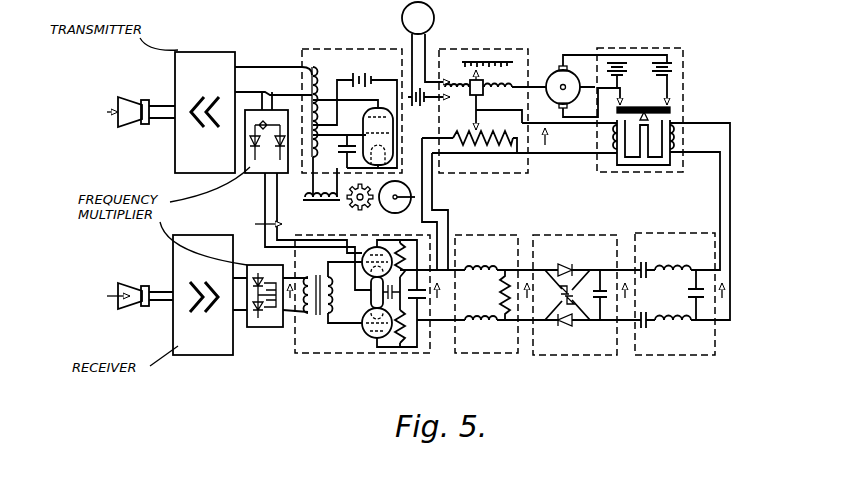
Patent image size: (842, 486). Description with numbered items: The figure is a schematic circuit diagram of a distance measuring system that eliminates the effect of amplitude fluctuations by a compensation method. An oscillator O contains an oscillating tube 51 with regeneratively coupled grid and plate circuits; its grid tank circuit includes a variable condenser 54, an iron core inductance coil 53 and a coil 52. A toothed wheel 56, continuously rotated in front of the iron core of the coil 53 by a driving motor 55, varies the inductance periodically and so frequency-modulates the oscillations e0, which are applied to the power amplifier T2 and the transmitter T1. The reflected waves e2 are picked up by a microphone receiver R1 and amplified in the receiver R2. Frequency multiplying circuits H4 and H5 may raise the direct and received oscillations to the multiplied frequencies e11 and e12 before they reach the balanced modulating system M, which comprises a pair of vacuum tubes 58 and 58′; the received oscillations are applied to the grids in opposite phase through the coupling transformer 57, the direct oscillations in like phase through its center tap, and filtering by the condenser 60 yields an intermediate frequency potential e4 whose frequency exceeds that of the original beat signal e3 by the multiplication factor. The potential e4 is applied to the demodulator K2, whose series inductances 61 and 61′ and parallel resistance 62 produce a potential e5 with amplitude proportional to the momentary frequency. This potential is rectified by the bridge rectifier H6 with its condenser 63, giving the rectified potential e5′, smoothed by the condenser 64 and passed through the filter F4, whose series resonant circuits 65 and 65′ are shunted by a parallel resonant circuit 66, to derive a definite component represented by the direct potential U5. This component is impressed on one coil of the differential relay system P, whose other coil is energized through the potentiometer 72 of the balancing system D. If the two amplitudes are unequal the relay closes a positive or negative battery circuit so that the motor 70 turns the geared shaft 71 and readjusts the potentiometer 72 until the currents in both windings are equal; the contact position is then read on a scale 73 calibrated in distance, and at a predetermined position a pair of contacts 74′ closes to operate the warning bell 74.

The power amplifier T2 is at (205, 44).
The transmitter T1 is at (147, 99).
The frequency-modulated oscillations e0 is at (291, 74).
The frequency multiplying circuit H4 is at (262, 173).
The multiplied oscillation e11 is at (280, 226).
The oscillator O is at (338, 49).
The oscillator coil 52 is at (310, 72).
The oscillating tube 51 is at (366, 120).
The variable condenser 54 is at (341, 151).
The iron core inductance coil 53 is at (308, 201).
The toothed wheel 56 is at (363, 207).
The driving motor 55 is at (400, 186).
The electric bell 74 is at (426, 45).
The pair of contacts 74′ is at (430, 103).
The balancing system D is at (476, 49).
The scale 73 is at (507, 60).
The geared shaft 71 is at (497, 92).
The potentiometer 72 is at (492, 146).
The beat frequency signal e3 is at (554, 141).
The motor 70 is at (559, 67).
The differential relay system P is at (683, 112).
The smoothing condenser 64 is at (642, 79).
The receiver R2 is at (205, 232).
The microphone receiver R1 is at (147, 287).
The reflected waves e2 is at (240, 286).
The frequency multiplying circuit H5 is at (262, 328).
The multiplied oscillation e12 is at (290, 300).
The balanced modulating system M is at (333, 355).
The coupling transformer 57 is at (325, 315).
The vacuum tube 58 is at (366, 250).
The vacuum tube 58′ is at (372, 345).
The condenser 60 is at (415, 300).
The intermediate frequency potential e4 is at (445, 297).
The demodulator network K2 is at (489, 355).
The series inductance 61 is at (488, 262).
The series inductance 61′ is at (484, 326).
The parallel resistance 62 is at (503, 294).
The demodulator output potential e5 is at (523, 299).
The rectifier H6 is at (571, 357).
The capacitor 63 is at (601, 297).
The rectified voltage e5′ is at (634, 299).
The filter F4 is at (674, 357).
The series resonant circuit 65 is at (690, 256).
The series resonant circuit 65′ is at (690, 336).
The parallel resonant circuit 66 is at (686, 291).
The direct potential U5 is at (727, 290).